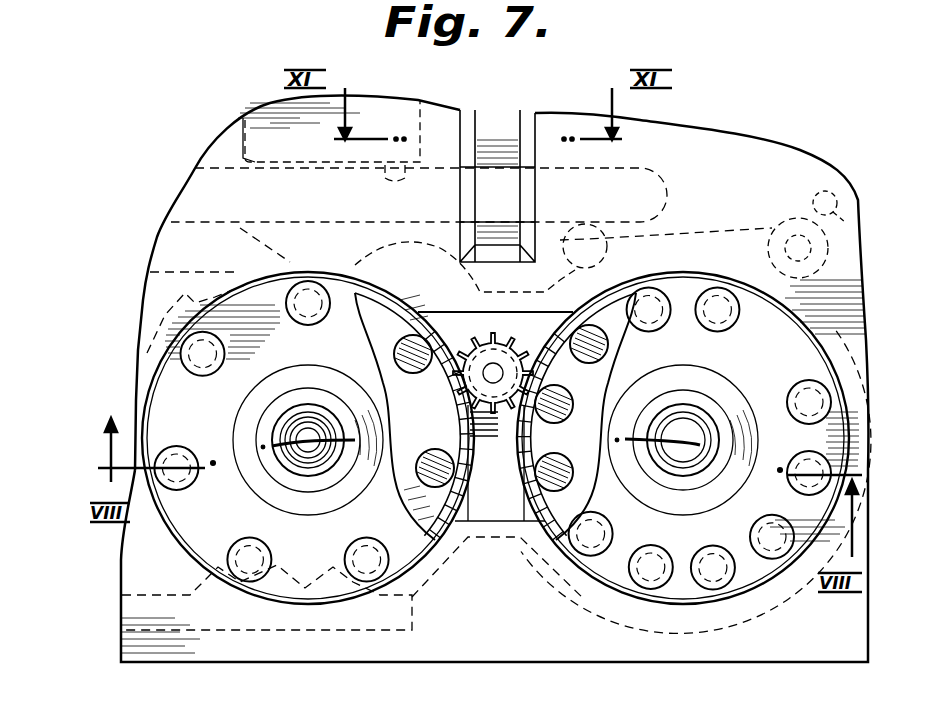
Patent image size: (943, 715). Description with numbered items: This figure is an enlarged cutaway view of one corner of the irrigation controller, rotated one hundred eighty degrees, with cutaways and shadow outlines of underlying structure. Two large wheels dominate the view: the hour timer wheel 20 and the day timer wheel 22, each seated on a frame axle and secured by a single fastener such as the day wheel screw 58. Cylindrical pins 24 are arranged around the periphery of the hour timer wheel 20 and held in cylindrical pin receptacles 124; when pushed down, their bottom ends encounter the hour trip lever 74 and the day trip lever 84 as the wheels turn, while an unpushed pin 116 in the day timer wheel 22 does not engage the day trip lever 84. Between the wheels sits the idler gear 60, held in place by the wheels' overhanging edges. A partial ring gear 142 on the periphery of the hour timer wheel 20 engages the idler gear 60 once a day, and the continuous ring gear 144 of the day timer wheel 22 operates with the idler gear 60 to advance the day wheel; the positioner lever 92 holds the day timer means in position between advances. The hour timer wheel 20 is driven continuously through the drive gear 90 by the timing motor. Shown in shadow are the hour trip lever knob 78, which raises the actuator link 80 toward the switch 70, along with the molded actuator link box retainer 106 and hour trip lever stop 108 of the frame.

The hour timer wheel 20 is at (612, 568).
The day timer wheel 22 is at (162, 406).
The pins 24 is at (198, 458).
The day wheel screw 58 is at (311, 455).
The idler gear 60 is at (510, 340).
The switch 70 is at (250, 140).
The hour trip lever 74 is at (736, 234).
The hour trip lever knob 78 is at (585, 238).
The actuator link 80 is at (642, 176).
The day trip lever 84 is at (194, 220).
The drive gear 90 is at (178, 556).
The positioner lever 92 is at (164, 625).
The actuator link box retainer 106 is at (500, 130).
The hour trip lever stop 108 is at (818, 195).
The pin 116 is at (307, 316).
The pin receptacles 124 is at (608, 346).
The partial ring gear 142 is at (525, 435).
The continuous ring gear 144 is at (445, 490).